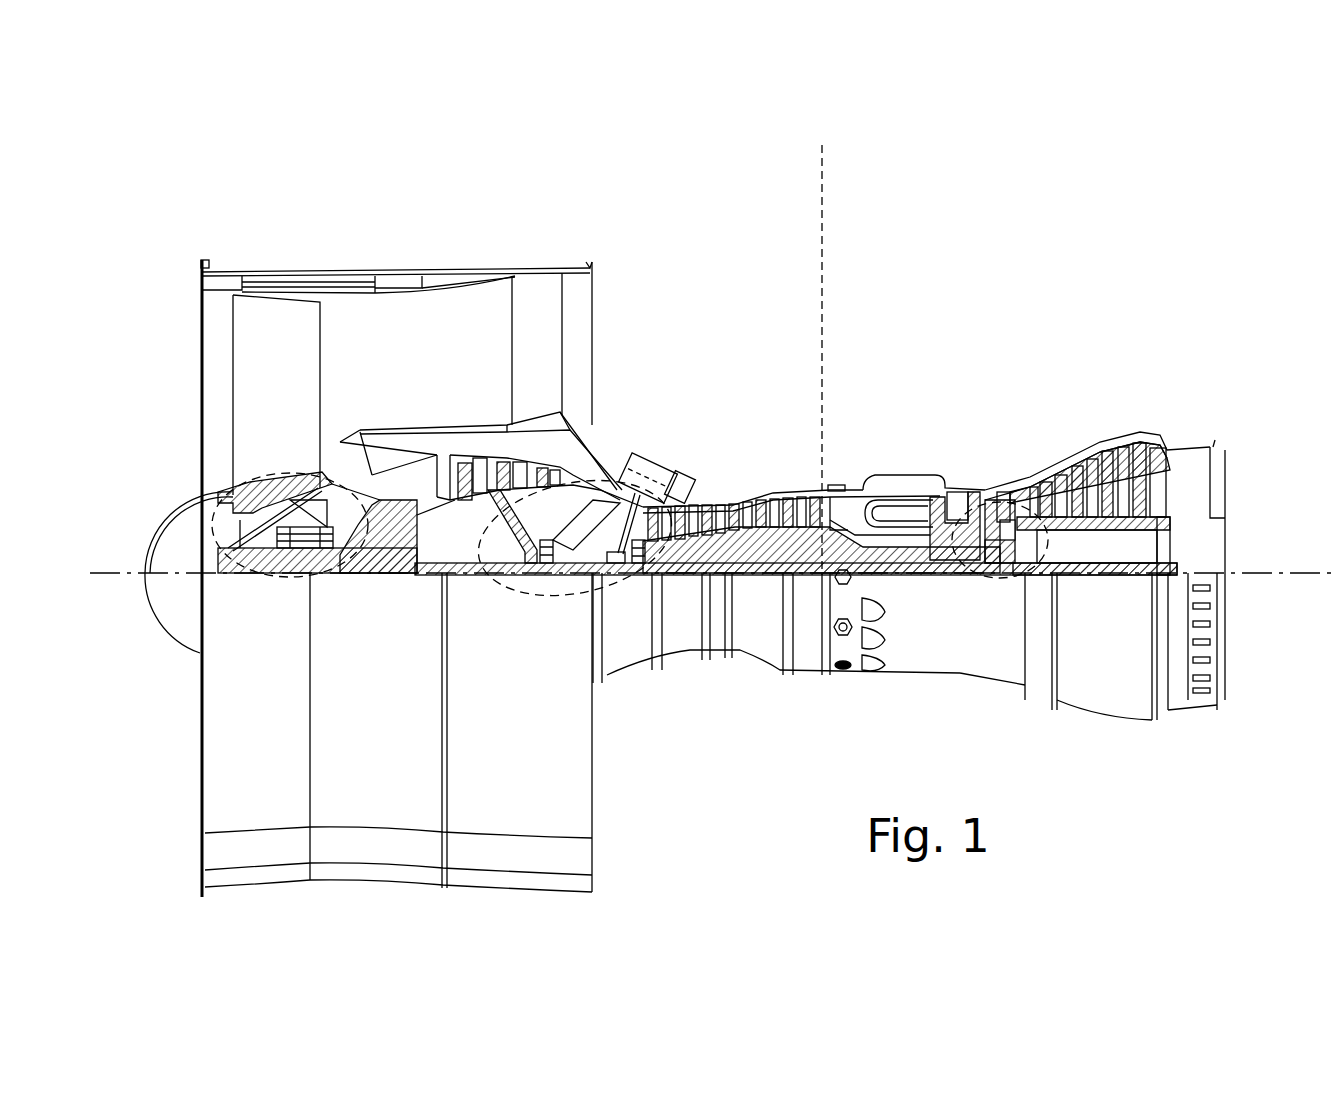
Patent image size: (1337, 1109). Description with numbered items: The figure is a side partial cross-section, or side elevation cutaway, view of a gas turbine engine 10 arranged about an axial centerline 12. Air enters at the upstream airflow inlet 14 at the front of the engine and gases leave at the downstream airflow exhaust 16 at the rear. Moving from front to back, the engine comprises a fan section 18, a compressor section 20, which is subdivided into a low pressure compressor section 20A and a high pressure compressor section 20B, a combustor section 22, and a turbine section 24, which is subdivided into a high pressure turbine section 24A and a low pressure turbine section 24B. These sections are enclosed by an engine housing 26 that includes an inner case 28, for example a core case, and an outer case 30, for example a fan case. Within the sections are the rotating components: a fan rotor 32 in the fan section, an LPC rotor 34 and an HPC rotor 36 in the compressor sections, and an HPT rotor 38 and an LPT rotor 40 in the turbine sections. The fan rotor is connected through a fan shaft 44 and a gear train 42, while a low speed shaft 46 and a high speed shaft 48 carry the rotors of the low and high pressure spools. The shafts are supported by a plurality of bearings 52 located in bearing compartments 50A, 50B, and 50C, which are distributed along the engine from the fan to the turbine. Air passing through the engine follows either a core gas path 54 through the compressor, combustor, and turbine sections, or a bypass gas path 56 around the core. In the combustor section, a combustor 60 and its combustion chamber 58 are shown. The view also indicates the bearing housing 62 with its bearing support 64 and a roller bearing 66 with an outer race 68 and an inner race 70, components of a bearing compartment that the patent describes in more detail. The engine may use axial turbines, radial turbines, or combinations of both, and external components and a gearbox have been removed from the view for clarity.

The gas turbine engine 10 is at (1148, 233).
The axial centerline 12 is at (1277, 574).
The upstream airflow inlet 14 is at (200, 367).
The downstream airflow exhaust 16 is at (1230, 486).
The fan section 18 is at (200, 240).
The compressor section 20 is at (820, 179).
The low pressure compressor section 20A is at (590, 405).
The high pressure compressor section 20B is at (820, 374).
The combustor section 22 is at (925, 374).
The turbine section 24 is at (928, 289).
The high pressure turbine section 24A is at (928, 374).
The low pressure turbine section 24B is at (1022, 374).
The engine housing 26 is at (605, 682).
The inner case 28 is at (809, 668).
The outer case 30 is at (513, 889).
The fan rotor 32 is at (230, 500).
The LPC rotor 34 is at (477, 577).
The HPC rotor 36 is at (757, 576).
The HPT rotor 38 is at (963, 552).
The LPT rotor 40 is at (1100, 540).
The gear train 42 is at (400, 580).
The fan shaft 44 is at (268, 574).
The low speed shaft 46 is at (1107, 572).
The high speed shaft 48 is at (907, 572).
The bearing compartment 50A is at (245, 482).
The bearing compartment 50B is at (567, 465).
The bearing compartment 50C is at (985, 500).
The plurality of bearings 52 is at (303, 575).
The core gas path 54 is at (397, 463).
The bypass gas path 56 is at (481, 406).
The combustion chamber 58 is at (895, 513).
The combustor 60 is at (905, 472).
The bearing housing 62 is at (645, 462).
The bearing support 64 is at (680, 474).
The roller bearing 66 is at (614, 503).
The outer race 68 is at (667, 502).
The inner race 70 is at (600, 580).